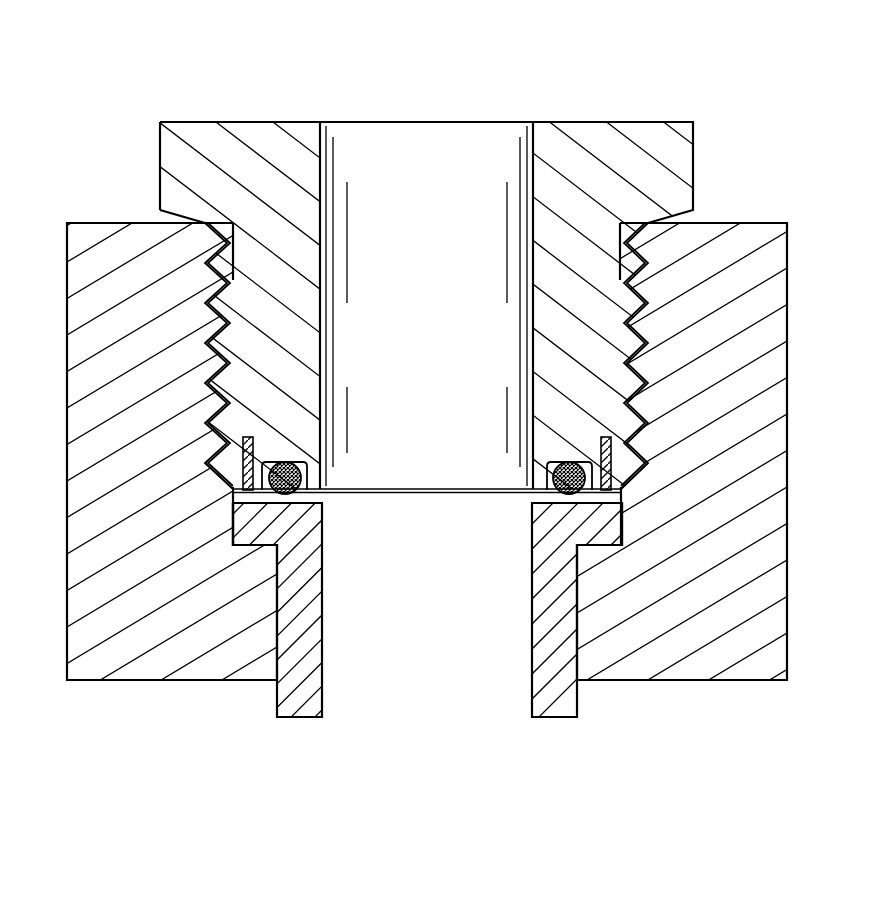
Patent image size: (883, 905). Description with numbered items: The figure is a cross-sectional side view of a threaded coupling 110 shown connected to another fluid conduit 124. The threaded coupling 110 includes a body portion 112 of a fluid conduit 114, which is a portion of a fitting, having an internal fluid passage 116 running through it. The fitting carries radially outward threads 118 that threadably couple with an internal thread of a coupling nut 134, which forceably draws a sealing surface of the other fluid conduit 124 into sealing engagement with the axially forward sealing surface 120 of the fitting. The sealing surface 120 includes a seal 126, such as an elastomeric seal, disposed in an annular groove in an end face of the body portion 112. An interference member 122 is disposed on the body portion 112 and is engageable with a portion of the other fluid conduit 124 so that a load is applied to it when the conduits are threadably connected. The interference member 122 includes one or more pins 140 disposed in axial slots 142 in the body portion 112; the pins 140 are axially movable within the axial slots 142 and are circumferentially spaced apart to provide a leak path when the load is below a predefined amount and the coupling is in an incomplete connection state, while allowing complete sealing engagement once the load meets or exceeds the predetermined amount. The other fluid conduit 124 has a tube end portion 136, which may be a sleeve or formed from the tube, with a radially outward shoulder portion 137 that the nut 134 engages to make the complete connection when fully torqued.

The threaded coupling 110 is at (201, 108).
The body portion 112 is at (180, 161).
The fluid conduit 114 is at (649, 105).
The internal fluid passage 116 is at (449, 150).
The threads 118 is at (633, 367).
The sealing surface 120 is at (560, 493).
The interference member 122 is at (211, 486).
The fluid conduit 124 is at (642, 709).
The seal 126 is at (300, 478).
The coupling nut 134 is at (742, 607).
The tube end portion 136 is at (290, 610).
The radially outward shoulder portion 137 is at (242, 528).
The pins 140 is at (235, 497).
The axial slots 142 is at (243, 455).